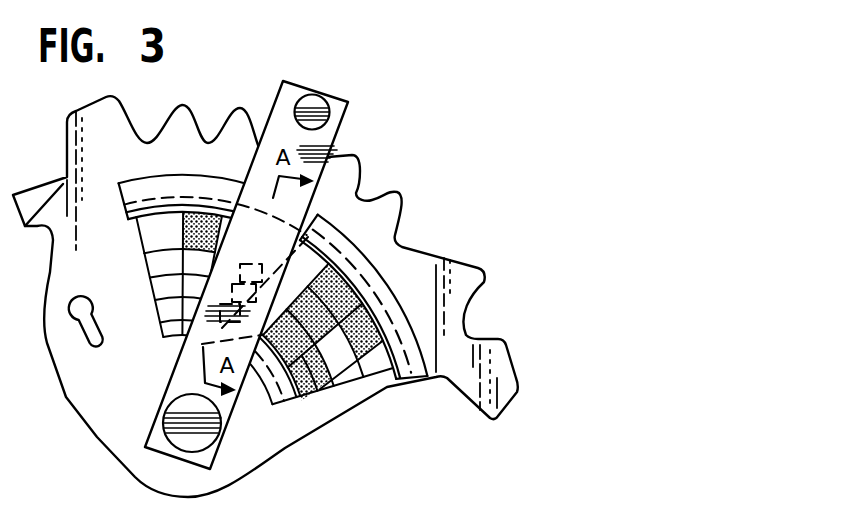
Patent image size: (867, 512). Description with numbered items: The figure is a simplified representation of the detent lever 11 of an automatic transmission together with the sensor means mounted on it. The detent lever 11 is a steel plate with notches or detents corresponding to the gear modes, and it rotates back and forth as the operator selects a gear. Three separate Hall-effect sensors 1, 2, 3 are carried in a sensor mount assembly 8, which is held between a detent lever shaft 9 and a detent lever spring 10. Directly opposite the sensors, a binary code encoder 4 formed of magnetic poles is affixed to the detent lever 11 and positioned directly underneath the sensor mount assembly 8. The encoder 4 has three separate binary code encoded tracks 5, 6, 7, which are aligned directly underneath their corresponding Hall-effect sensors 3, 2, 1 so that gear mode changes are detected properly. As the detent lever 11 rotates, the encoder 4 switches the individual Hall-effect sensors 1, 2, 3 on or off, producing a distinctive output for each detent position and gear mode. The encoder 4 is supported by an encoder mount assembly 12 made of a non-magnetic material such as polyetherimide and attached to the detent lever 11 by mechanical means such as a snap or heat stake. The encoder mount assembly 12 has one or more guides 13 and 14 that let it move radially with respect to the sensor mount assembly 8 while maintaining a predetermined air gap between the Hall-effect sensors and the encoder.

The Hall-effect sensor 1 is at (178, 343).
The Hall-effect sensor 2 is at (337, 204).
The Hall-effect sensor 3 is at (229, 170).
The binary code encoder 4 is at (348, 392).
The binary code encoded track 5 is at (146, 237).
The binary code encoded track 6 is at (148, 277).
The binary code encoded track 7 is at (158, 307).
The sensor mount assembly 8 is at (330, 157).
The detent lever shaft 9 is at (180, 413).
The detent lever spring 10 is at (312, 95).
The detent lever 11 is at (483, 289).
The encoder mount assembly 12 is at (390, 247).
The guide 13 is at (287, 398).
The guide 14 is at (145, 176).